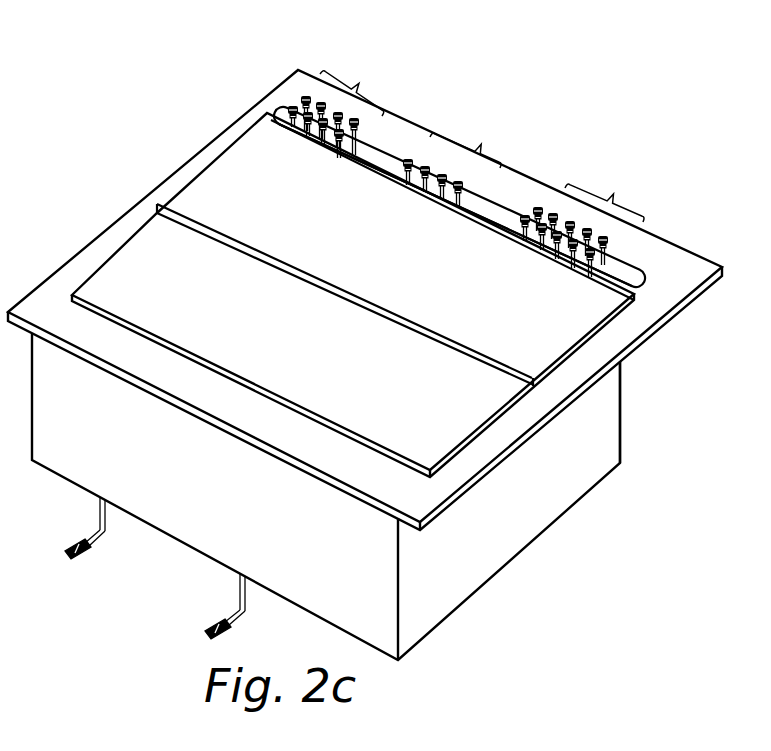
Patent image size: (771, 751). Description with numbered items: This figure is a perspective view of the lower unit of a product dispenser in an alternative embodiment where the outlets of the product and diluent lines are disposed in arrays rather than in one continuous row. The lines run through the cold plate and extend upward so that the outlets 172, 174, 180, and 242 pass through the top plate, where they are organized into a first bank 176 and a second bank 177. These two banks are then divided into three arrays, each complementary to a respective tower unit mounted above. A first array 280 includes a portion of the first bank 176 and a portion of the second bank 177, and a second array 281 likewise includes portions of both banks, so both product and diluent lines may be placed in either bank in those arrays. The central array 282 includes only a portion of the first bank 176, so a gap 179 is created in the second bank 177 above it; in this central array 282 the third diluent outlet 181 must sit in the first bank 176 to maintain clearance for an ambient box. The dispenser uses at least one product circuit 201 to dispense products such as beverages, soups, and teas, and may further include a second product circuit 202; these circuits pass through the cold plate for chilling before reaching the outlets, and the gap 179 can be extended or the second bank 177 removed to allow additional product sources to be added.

The outlet 172 is at (453, 158).
The outlet 174 is at (426, 186).
The first bank 176 is at (365, 289).
The second bank 177 is at (365, 273).
The gap 179 is at (353, 257).
The outlet 180 is at (353, 295).
The third diluent outlet 181 is at (422, 132).
The product circuit 201 is at (385, 497).
The second product circuit 202 is at (635, 487).
The outlet 242 is at (455, 211).
The first array 280 is at (354, 83).
The second array 281 is at (604, 192).
The central array 282 is at (468, 138).